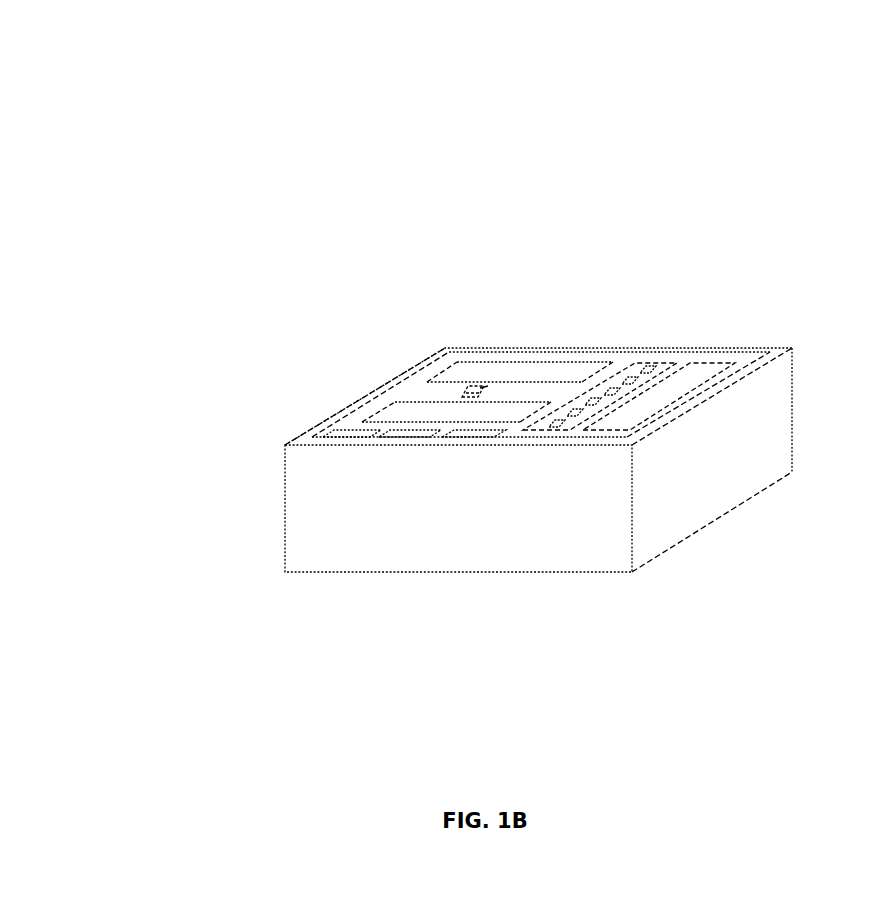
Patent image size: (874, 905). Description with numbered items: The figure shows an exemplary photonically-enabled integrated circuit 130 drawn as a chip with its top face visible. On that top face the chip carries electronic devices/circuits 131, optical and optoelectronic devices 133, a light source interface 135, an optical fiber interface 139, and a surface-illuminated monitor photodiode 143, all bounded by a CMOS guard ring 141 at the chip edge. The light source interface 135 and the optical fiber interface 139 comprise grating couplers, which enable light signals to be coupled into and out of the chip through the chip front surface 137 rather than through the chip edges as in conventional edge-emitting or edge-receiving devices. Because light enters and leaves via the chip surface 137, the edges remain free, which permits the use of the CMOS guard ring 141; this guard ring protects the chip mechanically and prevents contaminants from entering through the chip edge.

The photonically-enabled integrated circuit 130 is at (148, 106).
The electronic devices/circuits 131 is at (470, 446).
The optical and optoelectronic devices 133 is at (518, 381).
The light source interface 135 is at (484, 387).
The chip front surface 137 is at (572, 356).
The optical fiber interface 139 is at (653, 364).
The CMOS guard ring 141 is at (777, 352).
The surface-illuminated monitor photodiode 143 is at (462, 395).